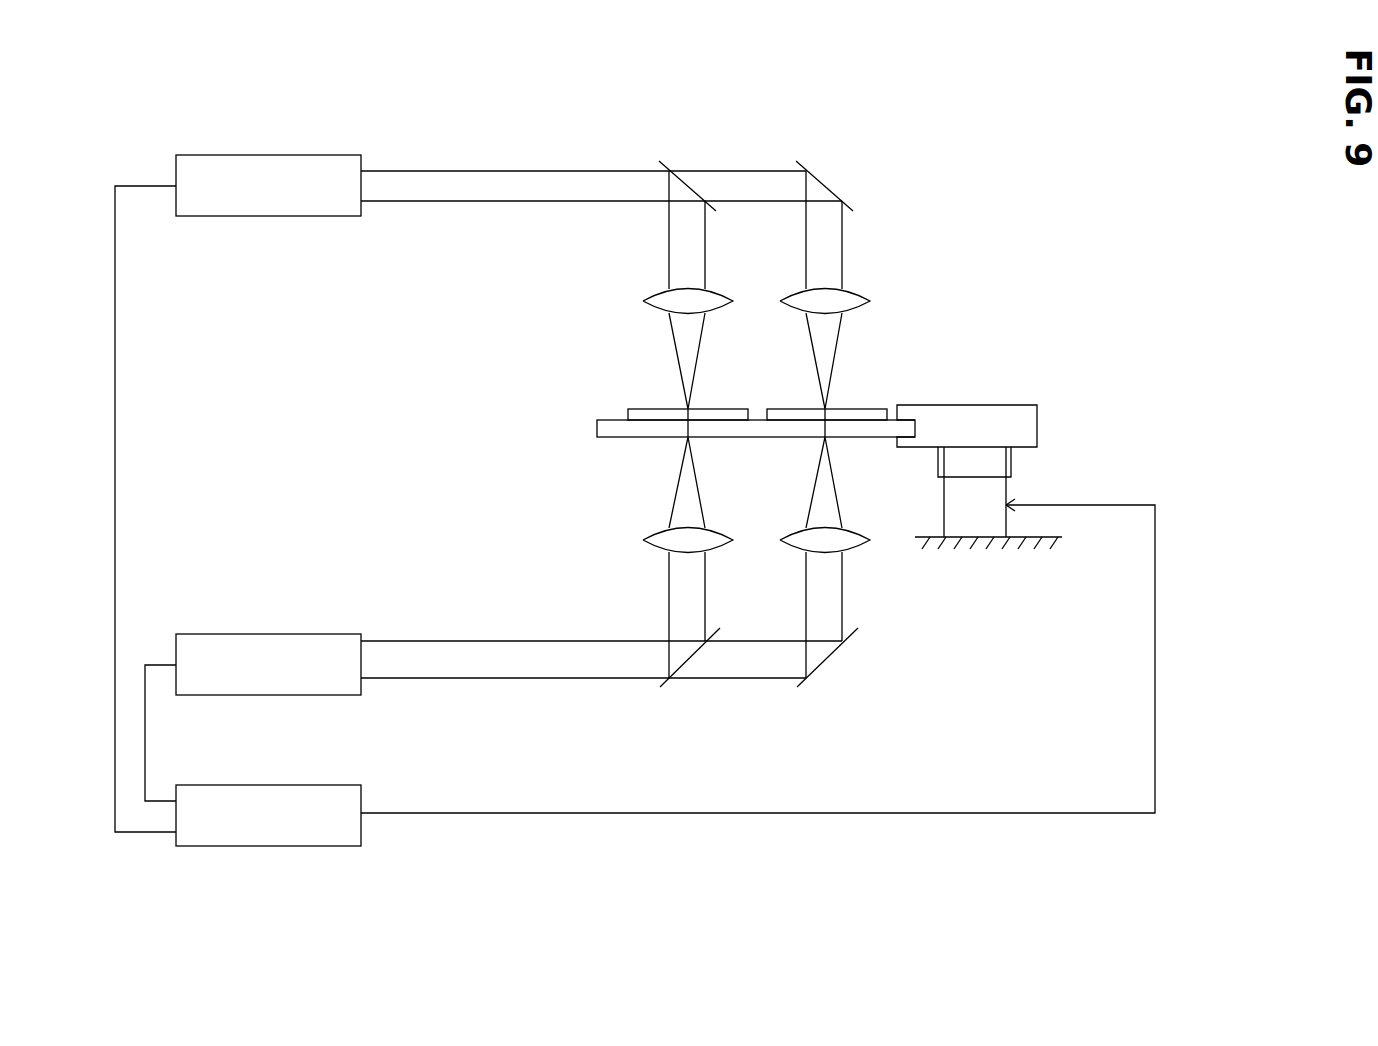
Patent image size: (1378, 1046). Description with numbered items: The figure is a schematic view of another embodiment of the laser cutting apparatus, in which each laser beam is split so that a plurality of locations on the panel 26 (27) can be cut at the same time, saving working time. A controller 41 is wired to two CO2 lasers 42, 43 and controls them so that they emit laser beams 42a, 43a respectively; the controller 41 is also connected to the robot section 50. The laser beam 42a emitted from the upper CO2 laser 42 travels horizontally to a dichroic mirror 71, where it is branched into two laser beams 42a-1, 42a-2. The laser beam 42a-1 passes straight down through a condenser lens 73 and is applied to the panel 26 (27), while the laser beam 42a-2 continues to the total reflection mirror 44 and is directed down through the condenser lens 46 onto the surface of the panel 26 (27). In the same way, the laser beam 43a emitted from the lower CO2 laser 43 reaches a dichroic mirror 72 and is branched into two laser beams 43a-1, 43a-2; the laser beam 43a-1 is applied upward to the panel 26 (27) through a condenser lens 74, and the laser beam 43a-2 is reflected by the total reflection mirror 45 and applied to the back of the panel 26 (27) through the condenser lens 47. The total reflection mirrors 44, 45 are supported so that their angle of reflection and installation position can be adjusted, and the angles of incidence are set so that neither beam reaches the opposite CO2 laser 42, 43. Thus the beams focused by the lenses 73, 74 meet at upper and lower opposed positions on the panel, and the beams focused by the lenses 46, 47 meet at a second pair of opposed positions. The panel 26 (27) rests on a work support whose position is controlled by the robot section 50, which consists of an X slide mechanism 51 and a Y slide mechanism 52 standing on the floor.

The controller 41 is at (305, 846).
The CO2 laser 42 is at (300, 216).
The laser beam 42a is at (518, 203).
The laser beam 42a-1 is at (719, 290).
The laser beam 42a-2 is at (856, 290).
The CO2 laser 43 is at (316, 634).
The laser beam 43a is at (490, 641).
The laser beam 43a-1 is at (719, 543).
The laser beam 43a-2 is at (856, 543).
The total reflection mirror 44 is at (833, 177).
The total reflection mirror 45 is at (830, 658).
The condenser lens 46 is at (870, 297).
The condenser lens 47 is at (862, 548).
The robot section 50 is at (1050, 410).
The X slide mechanism 51 is at (1020, 404).
The Y slide mechanism 52 is at (1012, 467).
The panel 26 is at (753, 387).
The panel 27 is at (652, 407).
The dichroic mirror 71 is at (668, 167).
The dichroic mirror 72 is at (665, 685).
The condenser lens 73 is at (650, 297).
The condenser lens 74 is at (652, 548).